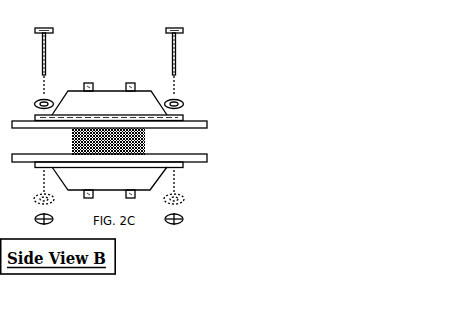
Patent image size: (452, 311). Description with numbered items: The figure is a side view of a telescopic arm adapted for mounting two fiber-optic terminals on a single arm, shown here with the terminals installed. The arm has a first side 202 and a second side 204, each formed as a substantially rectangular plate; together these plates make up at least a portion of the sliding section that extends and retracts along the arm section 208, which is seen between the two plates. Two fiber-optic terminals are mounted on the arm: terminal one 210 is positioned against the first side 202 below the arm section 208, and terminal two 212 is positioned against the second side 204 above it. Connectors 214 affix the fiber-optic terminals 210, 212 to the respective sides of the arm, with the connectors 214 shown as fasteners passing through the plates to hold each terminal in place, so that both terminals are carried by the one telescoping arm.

The connectors 214 is at (53, 28).
The terminal two 212 is at (163, 86).
The second side 204 is at (201, 116).
The arm section 208 is at (145, 147).
The first side 202 is at (187, 162).
The terminal one 210 is at (146, 183).